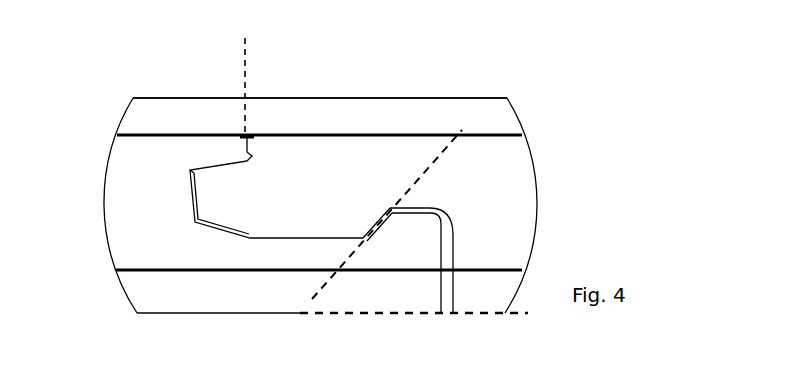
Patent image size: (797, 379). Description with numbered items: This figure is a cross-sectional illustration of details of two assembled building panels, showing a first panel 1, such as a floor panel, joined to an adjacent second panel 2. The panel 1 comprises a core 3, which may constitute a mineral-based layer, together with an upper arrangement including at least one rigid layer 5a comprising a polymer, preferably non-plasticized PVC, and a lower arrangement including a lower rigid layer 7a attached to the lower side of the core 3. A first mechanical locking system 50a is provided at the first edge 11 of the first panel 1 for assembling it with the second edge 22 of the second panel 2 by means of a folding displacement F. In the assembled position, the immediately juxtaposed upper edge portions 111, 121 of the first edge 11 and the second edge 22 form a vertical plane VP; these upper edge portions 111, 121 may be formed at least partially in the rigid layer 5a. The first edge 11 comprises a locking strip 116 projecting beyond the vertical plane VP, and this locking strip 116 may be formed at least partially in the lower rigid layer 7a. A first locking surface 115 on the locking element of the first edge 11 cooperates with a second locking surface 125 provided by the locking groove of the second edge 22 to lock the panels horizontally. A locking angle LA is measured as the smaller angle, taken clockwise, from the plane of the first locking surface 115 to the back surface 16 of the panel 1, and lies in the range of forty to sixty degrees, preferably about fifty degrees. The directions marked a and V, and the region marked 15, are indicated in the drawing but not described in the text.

The building panel 1 is at (82, 155).
The first mechanical locking system 50a is at (88, 65).
The direction a is at (40, 377).
The second panel 2 is at (490, 70).
The core 3 is at (143, 208).
The rigid layer 5a is at (170, 106).
The lower rigid layer 7a is at (199, 301).
The first edge 11 is at (152, 78).
The upper face portion 15 is at (448, 98).
The back surface 16 is at (404, 316).
The second edge 22 is at (330, 80).
The upper edge portion 111 is at (243, 137).
The first locking surface 115 is at (375, 229).
The locking strip 116 is at (299, 296).
The upper edge portion 121 is at (251, 137).
The second locking surface 125 is at (374, 228).
The folding displacement F is at (528, 42).
The direction V is at (763, 378).
The vertical plane VP is at (246, 74).
The locking angle LA is at (330, 279).